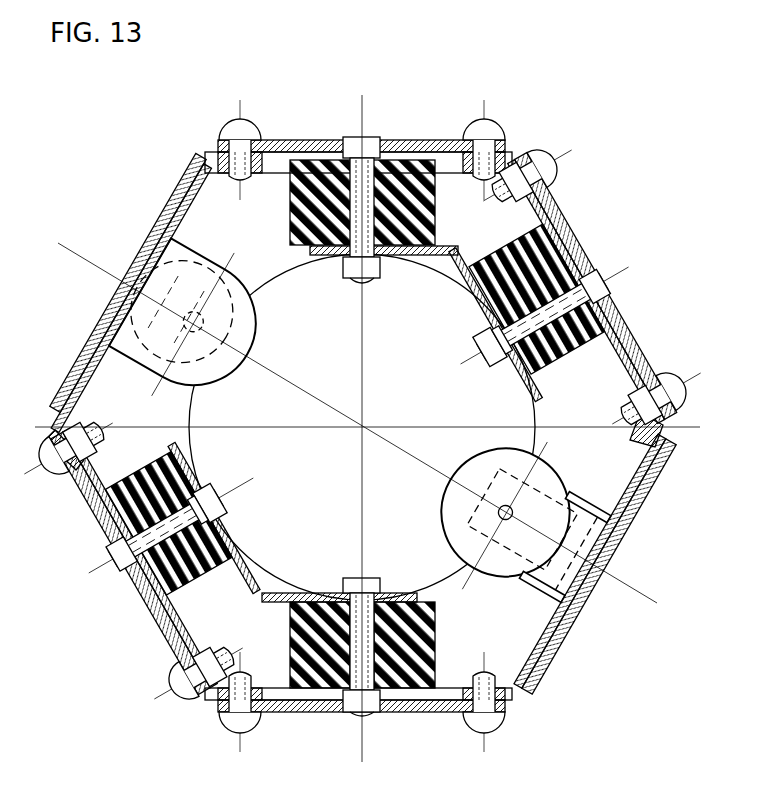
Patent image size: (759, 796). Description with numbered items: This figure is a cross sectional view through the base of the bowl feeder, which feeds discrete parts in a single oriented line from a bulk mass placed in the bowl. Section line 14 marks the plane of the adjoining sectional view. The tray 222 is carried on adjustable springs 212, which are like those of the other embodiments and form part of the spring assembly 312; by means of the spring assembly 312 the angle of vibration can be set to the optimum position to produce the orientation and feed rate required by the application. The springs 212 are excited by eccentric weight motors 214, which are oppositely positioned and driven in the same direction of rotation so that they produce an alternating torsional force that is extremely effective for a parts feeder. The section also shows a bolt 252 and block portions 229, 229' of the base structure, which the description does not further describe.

The section line 14- 14 is at (95, 257).
The eccentric weight motor 214 is at (250, 326).
The bolt 252 is at (643, 388).
The tray 222 is at (526, 414).
The spring assembly 312 is at (242, 533).
The springs 212 is at (315, 592).
The block half 229 is at (431, 645).
The block half 229' is at (291, 645).